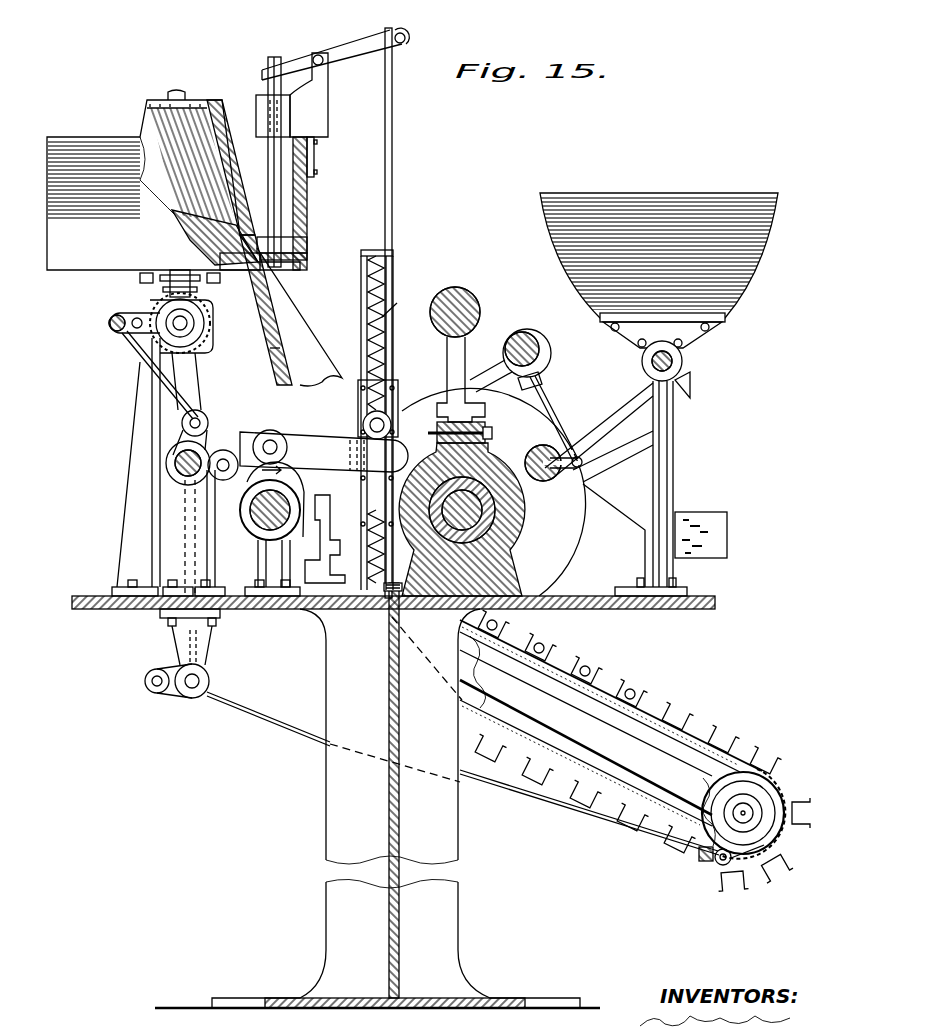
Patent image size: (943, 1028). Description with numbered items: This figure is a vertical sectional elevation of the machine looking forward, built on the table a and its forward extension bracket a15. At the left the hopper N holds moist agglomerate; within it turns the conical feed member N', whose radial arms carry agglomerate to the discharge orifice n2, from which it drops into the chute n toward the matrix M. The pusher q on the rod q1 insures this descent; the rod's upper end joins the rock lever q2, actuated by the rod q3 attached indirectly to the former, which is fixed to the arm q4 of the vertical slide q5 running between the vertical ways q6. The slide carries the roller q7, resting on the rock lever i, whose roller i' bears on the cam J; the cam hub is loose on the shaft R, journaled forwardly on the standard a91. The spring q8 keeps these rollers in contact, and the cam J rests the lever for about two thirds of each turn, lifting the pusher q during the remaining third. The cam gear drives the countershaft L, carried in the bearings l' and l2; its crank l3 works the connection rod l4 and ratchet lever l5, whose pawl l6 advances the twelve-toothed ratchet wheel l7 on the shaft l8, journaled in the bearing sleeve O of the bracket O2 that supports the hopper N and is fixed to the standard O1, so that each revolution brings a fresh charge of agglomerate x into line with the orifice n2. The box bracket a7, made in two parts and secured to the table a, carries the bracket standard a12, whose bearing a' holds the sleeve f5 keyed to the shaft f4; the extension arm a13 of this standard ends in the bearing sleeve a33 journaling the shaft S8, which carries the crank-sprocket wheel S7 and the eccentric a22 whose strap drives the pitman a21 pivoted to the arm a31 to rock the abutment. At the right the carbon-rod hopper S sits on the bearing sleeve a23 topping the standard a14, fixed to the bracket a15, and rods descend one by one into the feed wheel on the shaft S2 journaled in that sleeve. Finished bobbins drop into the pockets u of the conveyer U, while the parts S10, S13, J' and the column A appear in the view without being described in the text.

The hopper N is at (173, 180).
The conical feed member N' is at (204, 182).
The chute n is at (291, 310).
The discharge orifice n2 is at (261, 351).
The pusher q is at (280, 262).
The rod q1 is at (280, 198).
The rock lever q2 is at (362, 57).
The rod q3 is at (393, 105).
The vertical slide q5 is at (375, 252).
The vertical ways q6 is at (358, 393).
The roller q7 is at (385, 412).
The spring q8 is at (293, 653).
The shaft f4 is at (412, 325).
The arm q4 is at (417, 446).
The bearing l' is at (307, 494).
The sleeve f5 is at (461, 286).
The bracket standard a12 is at (463, 379).
The box bracket a7 is at (437, 425).
The bearing a' is at (462, 510).
The arm a31 is at (585, 462).
The shaft S8 is at (533, 350).
The extension arm a13 is at (504, 350).
The bearing sleeve a33 is at (528, 332).
The crank-sprocket wheel S7 is at (524, 384).
The eccentric a22 is at (548, 362).
The pitman a21 is at (548, 404).
The hopper S is at (660, 192).
The shaft S2 is at (662, 349).
The bearing sleeve a23 is at (682, 360).
The bracket S10 is at (690, 396).
The standard a14 is at (676, 470).
The box S13 is at (710, 517).
The bracket a15 is at (687, 588).
The table a is at (419, 606).
The standard O1 is at (140, 398).
The bracket O2 is at (157, 285).
The bearing sleeve O is at (207, 323).
The ratchet lever l5 is at (115, 315).
The shaft l8 is at (210, 310).
The pawl l6 is at (140, 347).
The connection rod l4 is at (137, 363).
The ratchet wheel l7 is at (187, 355).
The crank l3 is at (203, 410).
The bearing l2 is at (208, 422).
The countershaft L is at (183, 463).
The rock lever i is at (226, 456).
The roller i' is at (281, 447).
The shaft R is at (247, 510).
The cam J is at (275, 499).
The cam edge J' is at (147, 493).
The matrix M is at (325, 539).
The standard a91 is at (253, 607).
The column A is at (377, 808).
The conveyer U is at (693, 730).
The pockets u is at (627, 732).
The charge of agglomerate x is at (593, 662).